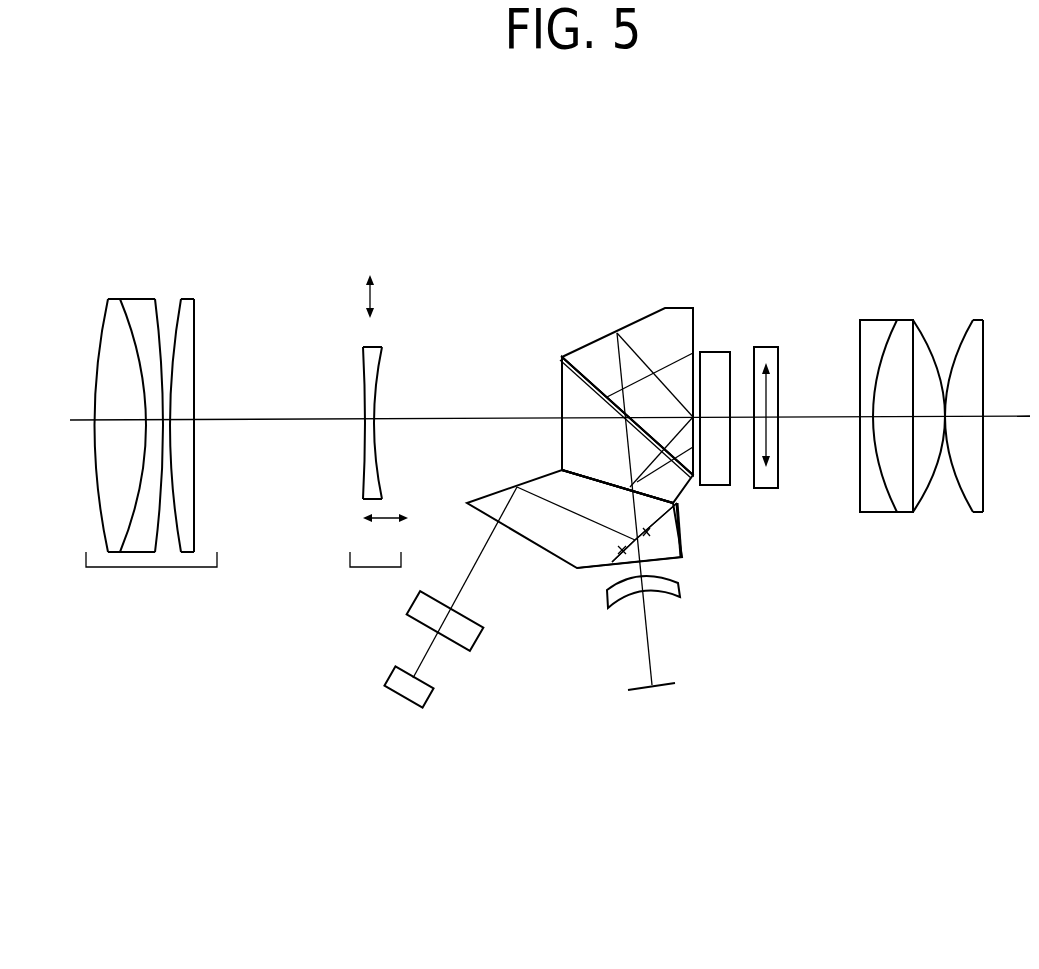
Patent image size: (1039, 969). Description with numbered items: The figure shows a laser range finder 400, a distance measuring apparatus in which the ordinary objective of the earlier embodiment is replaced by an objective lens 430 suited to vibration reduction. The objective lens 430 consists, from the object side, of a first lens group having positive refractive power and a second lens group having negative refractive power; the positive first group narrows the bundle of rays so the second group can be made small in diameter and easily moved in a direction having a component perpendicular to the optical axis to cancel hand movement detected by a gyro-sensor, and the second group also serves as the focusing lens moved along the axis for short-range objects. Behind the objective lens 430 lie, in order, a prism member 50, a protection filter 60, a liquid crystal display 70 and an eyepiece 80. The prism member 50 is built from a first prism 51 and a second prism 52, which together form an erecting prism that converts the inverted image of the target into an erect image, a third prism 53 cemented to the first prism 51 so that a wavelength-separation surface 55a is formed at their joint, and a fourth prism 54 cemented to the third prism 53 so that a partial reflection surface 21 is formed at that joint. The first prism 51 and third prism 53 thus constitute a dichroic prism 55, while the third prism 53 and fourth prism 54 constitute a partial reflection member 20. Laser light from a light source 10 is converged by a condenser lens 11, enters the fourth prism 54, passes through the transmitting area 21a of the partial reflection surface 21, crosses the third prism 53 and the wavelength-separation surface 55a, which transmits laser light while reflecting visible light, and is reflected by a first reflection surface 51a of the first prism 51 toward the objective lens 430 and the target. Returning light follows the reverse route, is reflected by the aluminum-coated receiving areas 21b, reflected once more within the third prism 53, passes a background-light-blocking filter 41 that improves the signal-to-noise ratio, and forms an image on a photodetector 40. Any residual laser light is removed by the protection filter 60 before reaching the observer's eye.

The laser range finder 400 is at (870, 184).
The objective lens 430 is at (388, 249).
The prism member 50 is at (555, 421).
The first prism 51 is at (562, 432).
The first reflection surface 51a is at (560, 385).
The second prism 52 is at (652, 314).
The third prism 53 is at (545, 473).
The fourth prism 54 is at (617, 565).
The dichroic prism 55 is at (463, 425).
The wavelength-separation surface 55a is at (597, 481).
The protection filter 60 is at (712, 352).
The liquid crystal display 70 is at (768, 347).
The eyepiece 80 is at (853, 307).
The partial reflection surface 21 is at (700, 542).
The transmitting area 21a is at (662, 522).
The receiving area 21b is at (640, 540).
The partial reflection member 20 is at (510, 637).
The condenser lens 11 is at (680, 593).
The light source 10 is at (660, 688).
The photodetector 40 is at (427, 702).
The background-light-blocking filter 41 is at (475, 645).